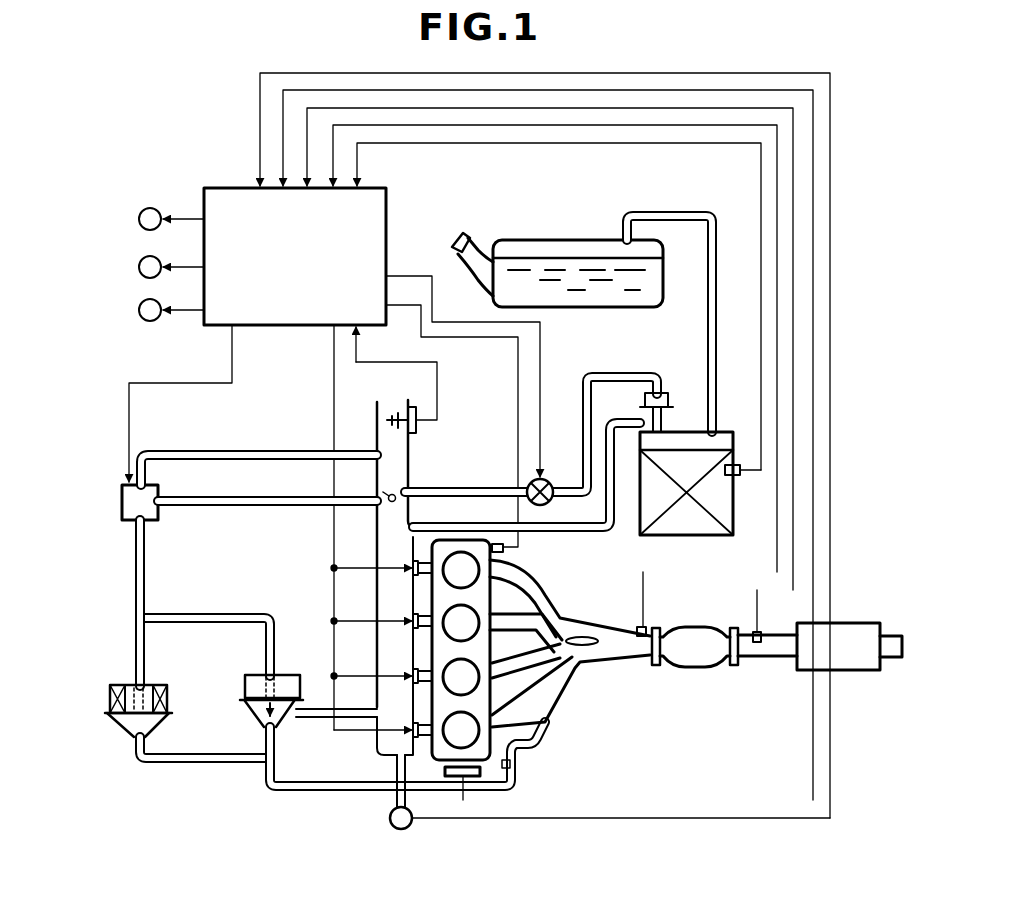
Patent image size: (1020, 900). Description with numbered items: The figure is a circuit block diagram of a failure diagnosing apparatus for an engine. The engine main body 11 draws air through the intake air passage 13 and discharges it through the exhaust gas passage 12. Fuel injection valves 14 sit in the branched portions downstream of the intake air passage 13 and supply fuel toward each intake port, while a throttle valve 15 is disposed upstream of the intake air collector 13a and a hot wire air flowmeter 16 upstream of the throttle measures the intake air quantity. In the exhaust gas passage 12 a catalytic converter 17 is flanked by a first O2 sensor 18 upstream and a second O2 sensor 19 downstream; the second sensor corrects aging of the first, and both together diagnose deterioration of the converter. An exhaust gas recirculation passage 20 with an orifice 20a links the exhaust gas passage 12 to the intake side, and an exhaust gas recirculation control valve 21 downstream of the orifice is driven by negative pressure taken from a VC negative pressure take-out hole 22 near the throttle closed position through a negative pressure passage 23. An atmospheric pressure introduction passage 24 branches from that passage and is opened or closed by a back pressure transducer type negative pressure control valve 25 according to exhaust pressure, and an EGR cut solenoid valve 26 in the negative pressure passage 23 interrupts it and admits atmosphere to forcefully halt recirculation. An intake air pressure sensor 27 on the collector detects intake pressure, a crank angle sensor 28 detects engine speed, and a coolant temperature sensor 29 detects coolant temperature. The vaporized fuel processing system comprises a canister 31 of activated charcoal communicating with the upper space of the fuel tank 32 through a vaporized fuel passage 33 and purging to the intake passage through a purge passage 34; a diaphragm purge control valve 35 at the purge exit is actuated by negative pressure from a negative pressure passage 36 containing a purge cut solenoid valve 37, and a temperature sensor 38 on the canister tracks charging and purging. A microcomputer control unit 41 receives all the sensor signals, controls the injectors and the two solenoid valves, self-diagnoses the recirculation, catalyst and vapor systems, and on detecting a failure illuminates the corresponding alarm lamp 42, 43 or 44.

The engine main body 11 is at (478, 704).
The exhaust gas passage 12 is at (582, 660).
The intake air passage 13 is at (398, 449).
The intake air collector 13a is at (388, 651).
The fuel injection valves 14 is at (418, 610).
The throttle valve 15 is at (390, 502).
The air flowmeter of a hot wire type 16 is at (406, 410).
The catalytic converter 17 is at (703, 666).
The first O2 sensor 18 is at (640, 624).
The second O2 sensor 19 is at (760, 632).
The exhaust gas recirculation passage 20 is at (346, 790).
The orifice 20a is at (516, 790).
The exhaust gas recirculation control valve 21 is at (246, 702).
The VC negative pressure take-out hole 22 is at (378, 500).
The negative pressure passage 23 is at (233, 505).
The atmospheric pressure introduction passage 24 is at (146, 660).
The negative pressure control valve 25 is at (156, 717).
The EGR cut solenoid valve 26 is at (152, 519).
The intake air pressure sensor 27 is at (394, 830).
The crank angle sensor 28 is at (474, 777).
The coolant temperature sensor 29 is at (506, 551).
The canister 31 is at (730, 512).
The fuel tank 32 is at (560, 240).
The vaporized fuel passage 33 is at (706, 327).
The purge passage 34 is at (612, 532).
The purge control valve 35 is at (672, 400).
The negative pressure passage 36 is at (588, 372).
The purge cut solenoid valve 37 is at (528, 486).
The temperature sensor 38 is at (736, 462).
The control unit 41 is at (387, 195).
The alarm lamp 42 is at (138, 222).
The alarm lamp 43 is at (138, 270).
The alarm lamp 44 is at (138, 313).